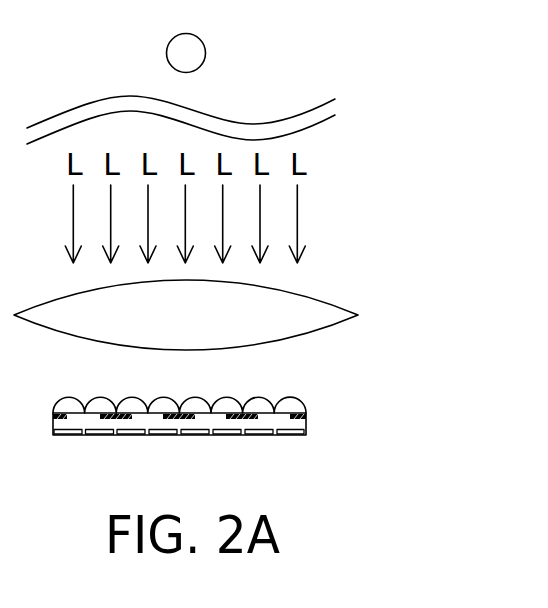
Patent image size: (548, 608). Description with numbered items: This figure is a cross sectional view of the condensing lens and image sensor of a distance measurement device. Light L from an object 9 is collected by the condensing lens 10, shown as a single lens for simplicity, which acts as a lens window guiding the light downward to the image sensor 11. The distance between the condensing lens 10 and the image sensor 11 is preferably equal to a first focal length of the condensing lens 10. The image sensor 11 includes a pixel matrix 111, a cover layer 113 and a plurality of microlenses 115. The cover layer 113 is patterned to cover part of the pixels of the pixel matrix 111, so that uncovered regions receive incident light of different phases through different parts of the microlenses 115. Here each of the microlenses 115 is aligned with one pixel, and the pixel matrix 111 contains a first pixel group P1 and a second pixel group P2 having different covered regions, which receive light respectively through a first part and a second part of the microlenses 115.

The object 9 is at (205, 52).
The condensing lens 10 is at (327, 309).
The image sensor 11 is at (259, 410).
The pixel matrix 111 is at (222, 444).
The cover layer 113 is at (306, 415).
The microlenses 115 is at (290, 398).
The first pixel group P1 is at (63, 436).
The second pixel group P2 is at (98, 436).